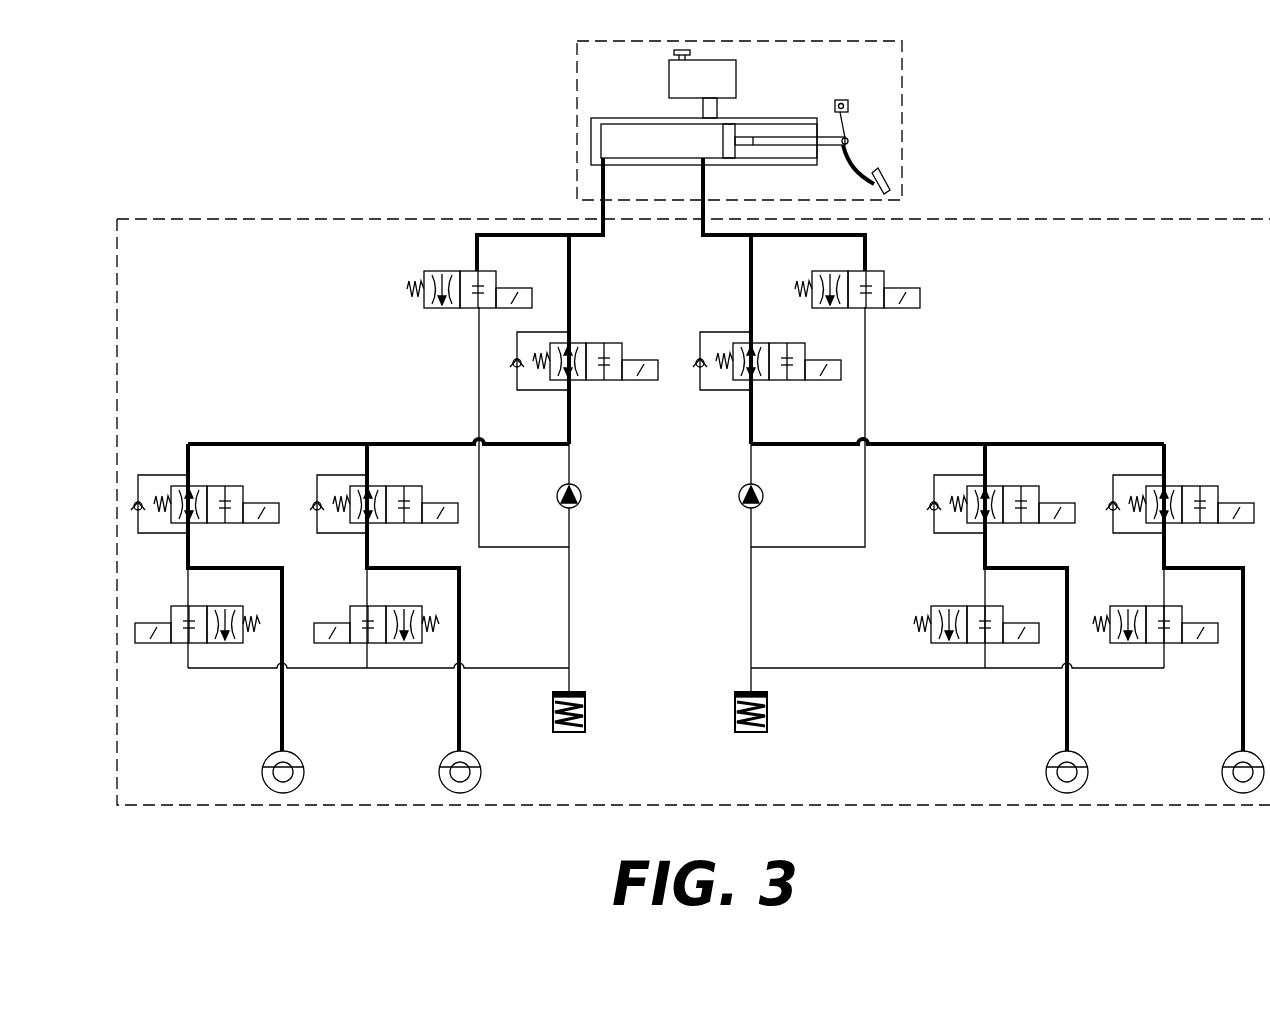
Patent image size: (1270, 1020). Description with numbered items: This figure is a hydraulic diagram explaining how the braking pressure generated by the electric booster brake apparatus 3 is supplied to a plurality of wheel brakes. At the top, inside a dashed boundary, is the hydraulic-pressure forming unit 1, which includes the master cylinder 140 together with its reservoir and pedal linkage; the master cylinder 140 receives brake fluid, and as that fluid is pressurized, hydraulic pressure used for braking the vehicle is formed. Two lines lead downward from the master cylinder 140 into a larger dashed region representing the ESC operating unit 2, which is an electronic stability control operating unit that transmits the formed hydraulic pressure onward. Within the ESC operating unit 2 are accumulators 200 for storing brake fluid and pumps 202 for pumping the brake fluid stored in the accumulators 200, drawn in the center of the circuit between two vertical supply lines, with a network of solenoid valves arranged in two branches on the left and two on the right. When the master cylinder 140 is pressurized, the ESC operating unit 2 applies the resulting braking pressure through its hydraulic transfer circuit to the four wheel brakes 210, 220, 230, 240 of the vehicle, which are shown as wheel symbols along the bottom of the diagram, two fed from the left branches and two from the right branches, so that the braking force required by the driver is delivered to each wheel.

The hydraulic-pressure forming unit 1 is at (901, 88).
The ESC operating unit 2 is at (1022, 220).
The electric booster brake apparatus 3 is at (312, 168).
The master cylinder 140 is at (603, 136).
The accumulator 200 is at (586, 724).
The pump 202 is at (738, 500).
The wheel brake 210 is at (304, 776).
The wheel brake 220 is at (481, 776).
The wheel brake 230 is at (1046, 776).
The wheel brake 240 is at (1222, 776).